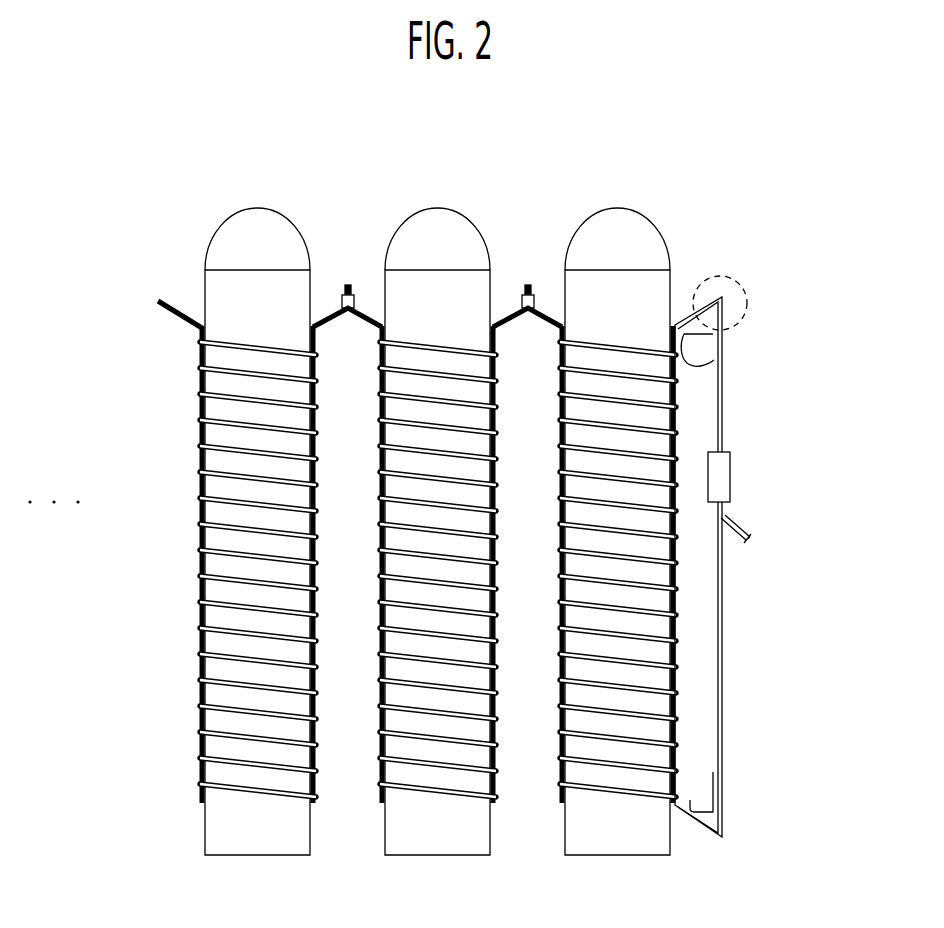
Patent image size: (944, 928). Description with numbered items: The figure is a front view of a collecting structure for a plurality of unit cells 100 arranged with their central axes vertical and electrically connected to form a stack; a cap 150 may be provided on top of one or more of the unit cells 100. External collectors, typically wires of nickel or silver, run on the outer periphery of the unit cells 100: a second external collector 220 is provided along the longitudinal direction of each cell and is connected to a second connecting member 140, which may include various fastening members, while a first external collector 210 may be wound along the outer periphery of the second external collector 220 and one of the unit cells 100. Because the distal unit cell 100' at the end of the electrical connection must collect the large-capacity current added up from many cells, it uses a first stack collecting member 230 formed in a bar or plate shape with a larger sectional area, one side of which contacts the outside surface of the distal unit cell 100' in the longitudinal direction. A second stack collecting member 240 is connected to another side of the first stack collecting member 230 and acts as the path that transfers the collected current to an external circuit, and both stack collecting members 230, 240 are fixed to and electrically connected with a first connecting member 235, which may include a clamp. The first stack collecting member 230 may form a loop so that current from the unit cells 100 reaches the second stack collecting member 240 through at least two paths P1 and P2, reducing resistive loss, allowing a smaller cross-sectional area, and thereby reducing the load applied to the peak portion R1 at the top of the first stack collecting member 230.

The unit cell 100 is at (333, 494).
The distal unit cell 100' is at (660, 516).
The cap 150 is at (291, 220).
The second connecting member 140 is at (519, 300).
The second external collector 220 is at (201, 533).
The first stack collecting member 230 is at (677, 418).
The first connecting member 235 is at (732, 462).
The second stack collecting member 240 is at (741, 542).
The first external collector 210 is at (655, 756).
The peak portion R1 is at (748, 300).
The first path P1 is at (712, 340).
The second path P2 is at (710, 778).